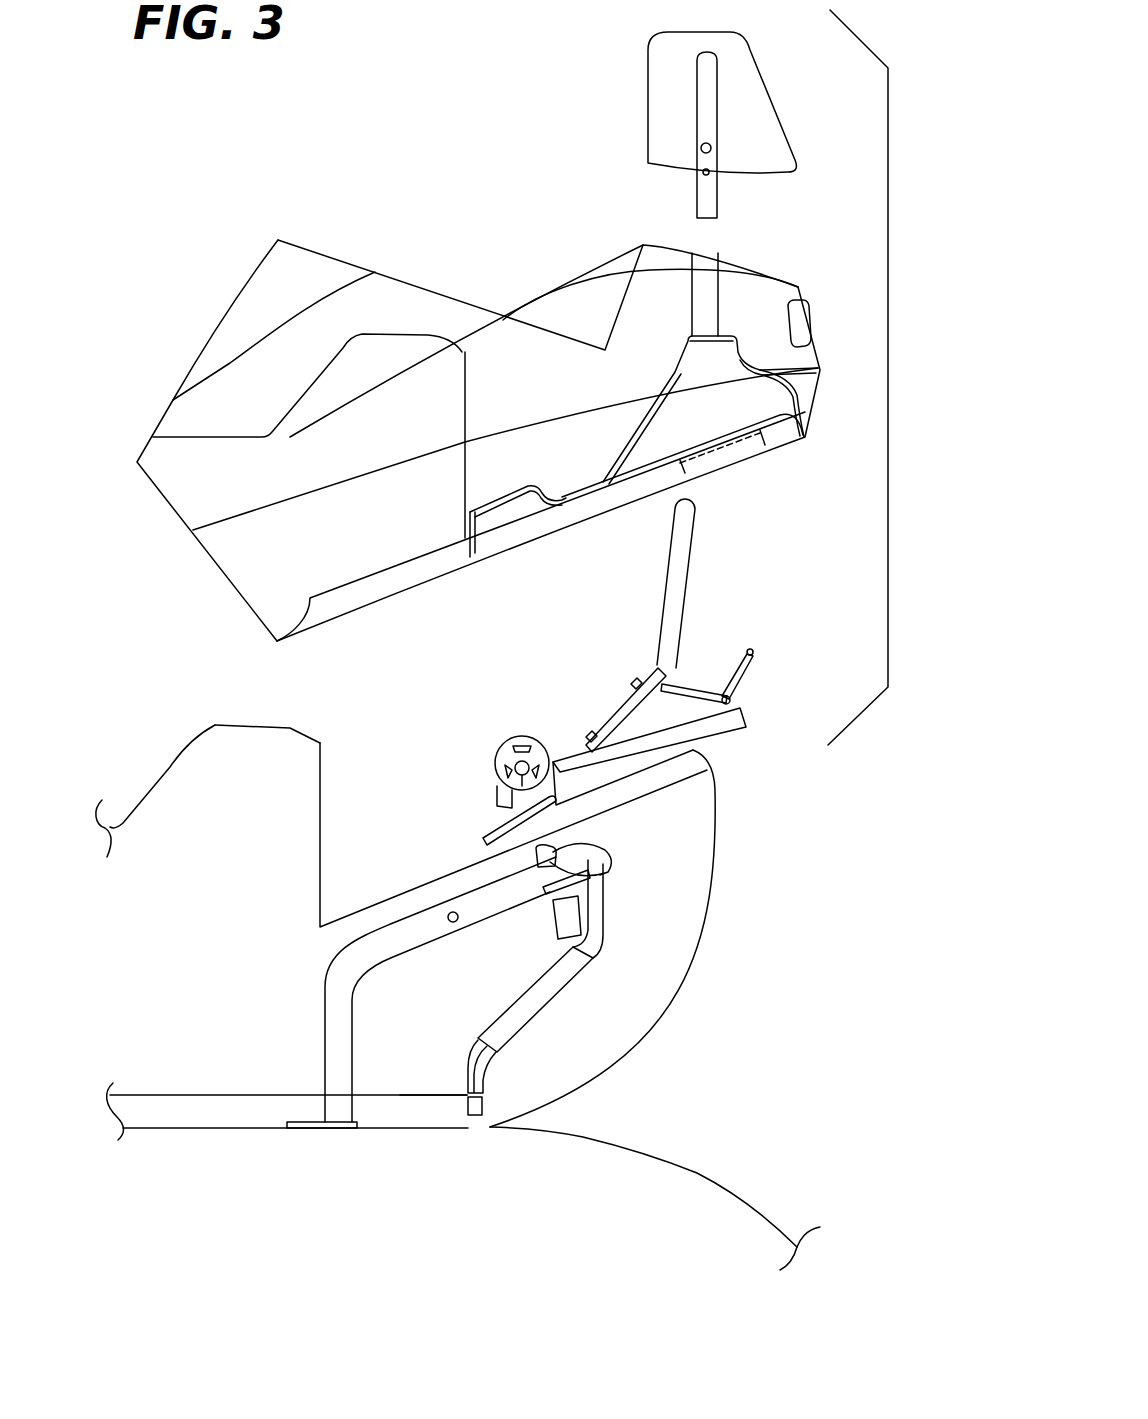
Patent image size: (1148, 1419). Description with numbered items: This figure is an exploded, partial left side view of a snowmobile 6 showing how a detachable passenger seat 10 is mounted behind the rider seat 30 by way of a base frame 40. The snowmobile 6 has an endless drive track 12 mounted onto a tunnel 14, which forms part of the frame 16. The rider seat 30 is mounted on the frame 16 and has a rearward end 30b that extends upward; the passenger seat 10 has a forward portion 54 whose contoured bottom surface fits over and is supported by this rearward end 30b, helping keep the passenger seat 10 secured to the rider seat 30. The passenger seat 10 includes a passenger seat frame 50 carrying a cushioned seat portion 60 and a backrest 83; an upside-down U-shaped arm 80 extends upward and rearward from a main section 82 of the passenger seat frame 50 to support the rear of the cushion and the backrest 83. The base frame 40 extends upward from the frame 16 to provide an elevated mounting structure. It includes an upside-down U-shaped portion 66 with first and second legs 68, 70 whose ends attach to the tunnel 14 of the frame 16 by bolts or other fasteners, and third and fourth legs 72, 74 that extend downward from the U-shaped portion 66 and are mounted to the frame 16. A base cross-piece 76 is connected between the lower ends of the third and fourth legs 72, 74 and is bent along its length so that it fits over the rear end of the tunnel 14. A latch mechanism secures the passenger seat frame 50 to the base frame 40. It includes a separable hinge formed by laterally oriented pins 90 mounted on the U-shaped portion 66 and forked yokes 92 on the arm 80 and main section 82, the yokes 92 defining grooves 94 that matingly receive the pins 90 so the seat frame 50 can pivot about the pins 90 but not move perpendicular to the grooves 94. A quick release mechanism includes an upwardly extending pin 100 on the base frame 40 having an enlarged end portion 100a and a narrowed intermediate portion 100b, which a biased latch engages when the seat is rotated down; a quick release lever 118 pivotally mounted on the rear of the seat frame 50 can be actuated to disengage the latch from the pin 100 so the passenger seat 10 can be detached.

The snowmobile 6 is at (401, 745).
The passenger seat 10 is at (887, 382).
The endless drive track 12 is at (697, 1175).
The tunnel 14 is at (420, 1092).
The frame 16 is at (291, 1106).
The rider seat 30 is at (401, 777).
The rearward end 30b is at (268, 727).
The base frame 40 is at (587, 980).
The passenger seat frame 50 is at (623, 888).
The forward portion 54 is at (395, 335).
The cushioned seat portion 60 is at (478, 412).
The U-shaped portion 66 is at (374, 992).
The first leg 68 is at (275, 1074).
The second leg 70 is at (323, 1067).
The third leg 72 is at (577, 1051).
The fourth leg 74 is at (549, 1011).
The base cross-piece 76 is at (467, 1110).
The U-shaped arm 80 is at (693, 552).
The main section 82 is at (715, 774).
The backrest 83 is at (781, 116).
The pins 90 is at (447, 915).
The forked yokes 92 is at (496, 804).
The grooves 94 is at (497, 813).
The pin 100 is at (621, 884).
The enlarged end portion 100a is at (613, 860).
The narrowed intermediate portion 100b is at (604, 882).
The quick release lever 118 is at (757, 662).